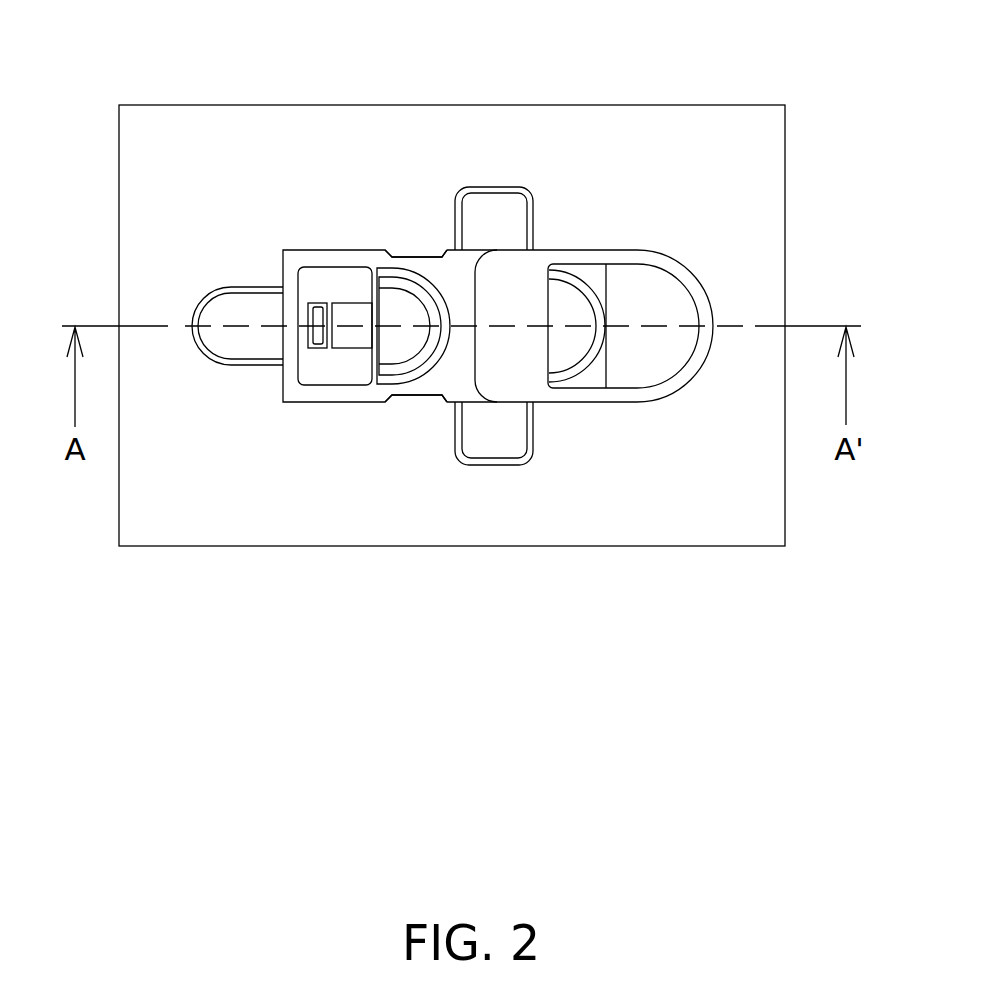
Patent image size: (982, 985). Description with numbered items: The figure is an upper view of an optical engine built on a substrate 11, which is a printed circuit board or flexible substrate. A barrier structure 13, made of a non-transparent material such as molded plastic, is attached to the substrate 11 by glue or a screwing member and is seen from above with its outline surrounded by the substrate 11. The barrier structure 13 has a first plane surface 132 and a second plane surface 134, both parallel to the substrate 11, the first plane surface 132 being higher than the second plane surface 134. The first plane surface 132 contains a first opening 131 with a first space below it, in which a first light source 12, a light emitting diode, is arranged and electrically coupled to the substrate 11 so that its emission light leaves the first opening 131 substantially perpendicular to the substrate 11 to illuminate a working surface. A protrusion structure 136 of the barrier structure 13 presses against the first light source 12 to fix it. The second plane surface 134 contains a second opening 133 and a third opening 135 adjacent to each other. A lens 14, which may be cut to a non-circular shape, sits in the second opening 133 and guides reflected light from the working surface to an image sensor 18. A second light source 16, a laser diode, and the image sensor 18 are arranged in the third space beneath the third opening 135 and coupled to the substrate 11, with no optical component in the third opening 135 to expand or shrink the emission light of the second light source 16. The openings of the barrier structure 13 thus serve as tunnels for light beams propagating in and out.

The substrate 11 is at (785, 192).
The first light source 12 is at (572, 348).
The barrier structure 13 is at (669, 250).
The first opening 131 is at (593, 283).
The first plane surface 132 is at (530, 365).
The second opening 133 is at (402, 287).
The second plane surface 134 is at (448, 370).
The third opening 135 is at (322, 290).
The protrusion structure 136 is at (655, 358).
The lens 14 is at (401, 347).
The second light source 16 is at (318, 337).
The image sensor 18 is at (351, 312).